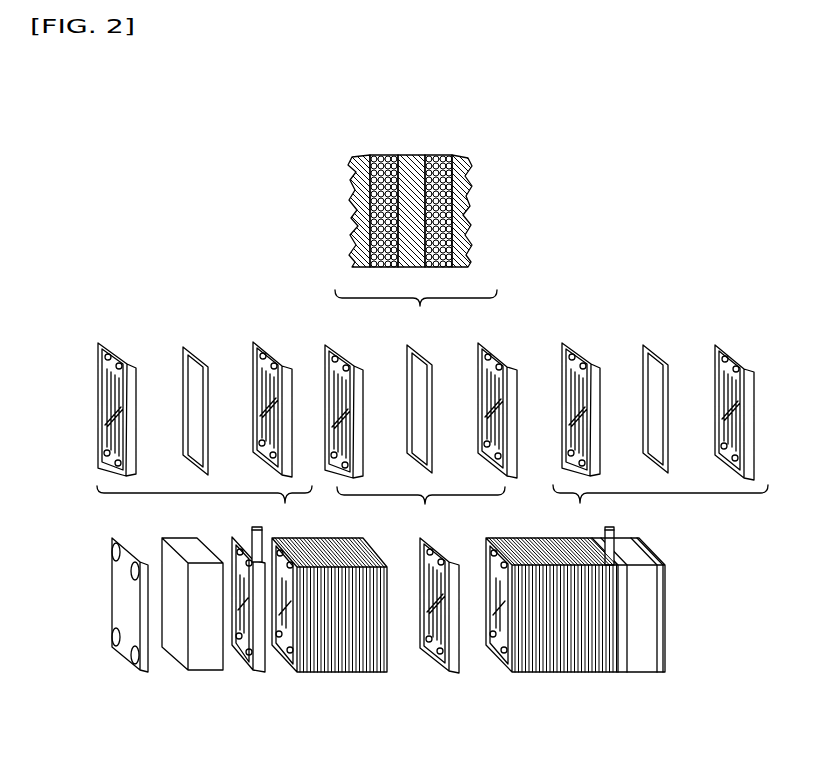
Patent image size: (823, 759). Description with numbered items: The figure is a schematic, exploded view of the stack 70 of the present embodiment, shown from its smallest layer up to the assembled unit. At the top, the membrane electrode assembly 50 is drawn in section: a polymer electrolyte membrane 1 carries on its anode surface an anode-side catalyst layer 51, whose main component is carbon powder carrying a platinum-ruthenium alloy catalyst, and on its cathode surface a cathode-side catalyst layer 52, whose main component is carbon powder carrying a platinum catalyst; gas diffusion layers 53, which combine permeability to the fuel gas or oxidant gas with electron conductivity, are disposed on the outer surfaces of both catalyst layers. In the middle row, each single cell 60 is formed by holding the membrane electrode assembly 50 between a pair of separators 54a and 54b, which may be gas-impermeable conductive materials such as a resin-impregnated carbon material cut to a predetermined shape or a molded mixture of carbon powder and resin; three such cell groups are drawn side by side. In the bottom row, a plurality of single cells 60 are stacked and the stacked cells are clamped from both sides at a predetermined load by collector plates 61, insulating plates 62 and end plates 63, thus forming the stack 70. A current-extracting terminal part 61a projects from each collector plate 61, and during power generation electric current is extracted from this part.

The polymer electrolyte membrane 1 is at (412, 156).
The anode-side catalyst layer 51 is at (381, 156).
The cathode-side catalyst layer 52 is at (441, 156).
The gas diffusion layer 53 is at (357, 156).
The membrane electrode assembly 50 is at (189, 347).
The separator 54a is at (112, 344).
The separator 54b is at (268, 343).
The single cell 60 is at (435, 657).
The collector plate 61 is at (240, 657).
The current-extracting terminal part 61a is at (256, 528).
The insulating plate 62 is at (190, 672).
The end plate 63 is at (125, 655).
The stack 70 is at (655, 292).